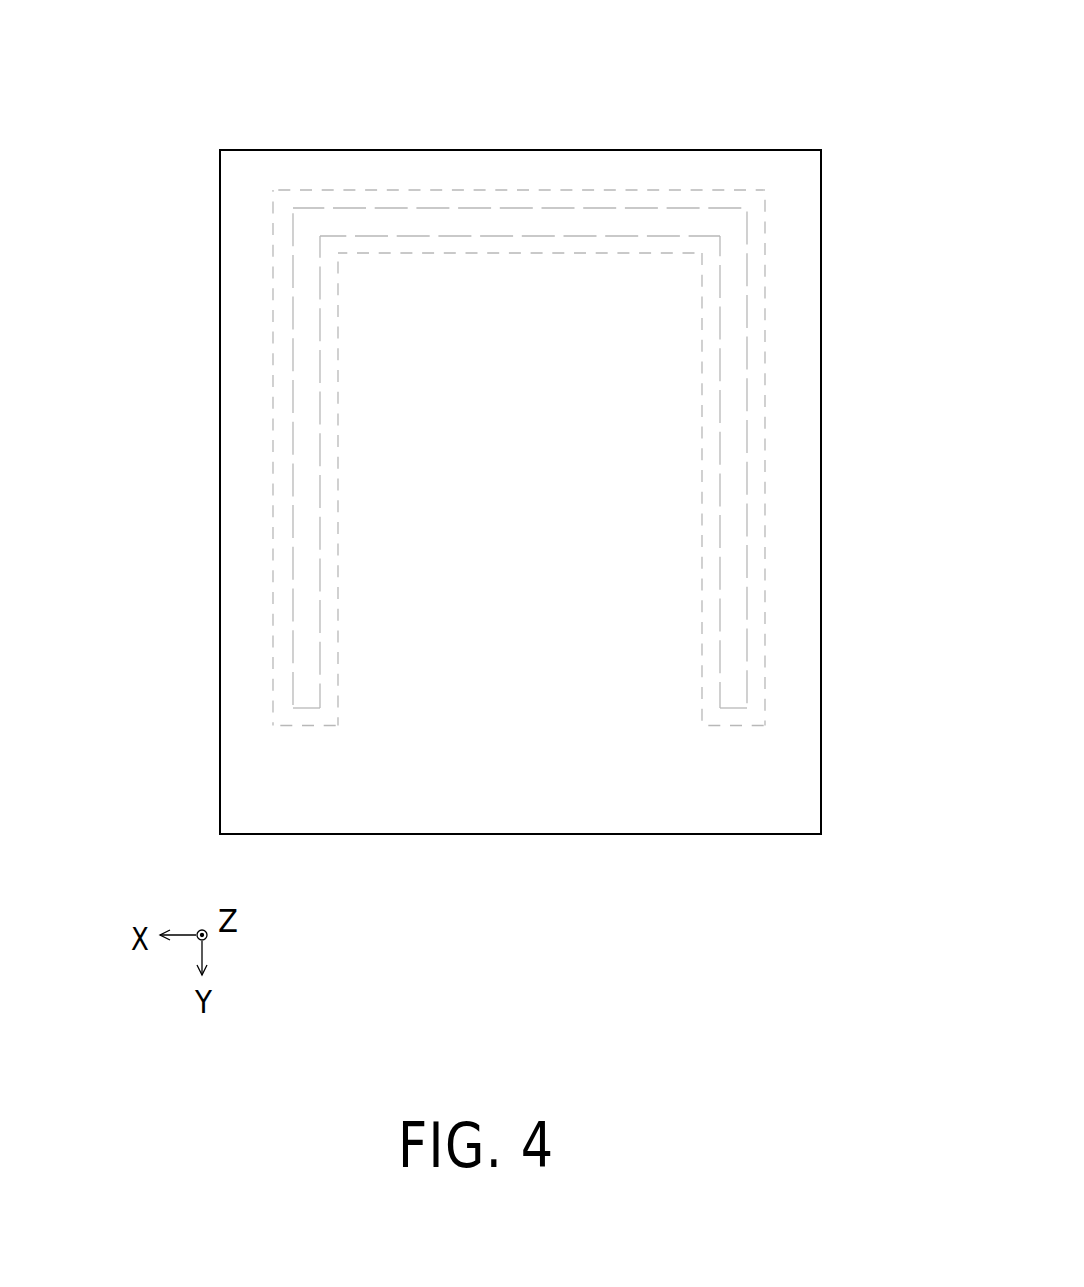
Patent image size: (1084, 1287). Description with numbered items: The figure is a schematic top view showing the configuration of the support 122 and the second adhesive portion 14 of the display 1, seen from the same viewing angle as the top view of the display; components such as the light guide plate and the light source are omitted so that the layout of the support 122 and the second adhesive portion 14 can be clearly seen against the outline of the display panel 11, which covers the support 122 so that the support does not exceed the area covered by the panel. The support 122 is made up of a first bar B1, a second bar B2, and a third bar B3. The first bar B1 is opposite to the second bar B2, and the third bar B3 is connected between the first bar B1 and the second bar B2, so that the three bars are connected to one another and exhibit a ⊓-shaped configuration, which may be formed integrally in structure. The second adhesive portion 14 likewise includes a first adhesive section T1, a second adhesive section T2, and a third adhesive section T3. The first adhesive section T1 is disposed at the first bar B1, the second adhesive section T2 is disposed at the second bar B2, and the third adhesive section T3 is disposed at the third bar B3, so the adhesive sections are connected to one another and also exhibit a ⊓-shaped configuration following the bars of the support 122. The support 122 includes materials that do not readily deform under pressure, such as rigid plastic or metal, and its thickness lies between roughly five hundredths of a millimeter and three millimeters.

The display 1 is at (214, 39).
The display panel 11 is at (320, 834).
The second adhesive portion 14 is at (508, 381).
The support 122 is at (502, 381).
The first adhesive section T1 is at (307, 307).
The second adhesive section T2 is at (732, 312).
The third adhesive section T3 is at (457, 217).
The first bar B1 is at (287, 458).
The second bar B2 is at (753, 555).
The third bar B3 is at (622, 197).